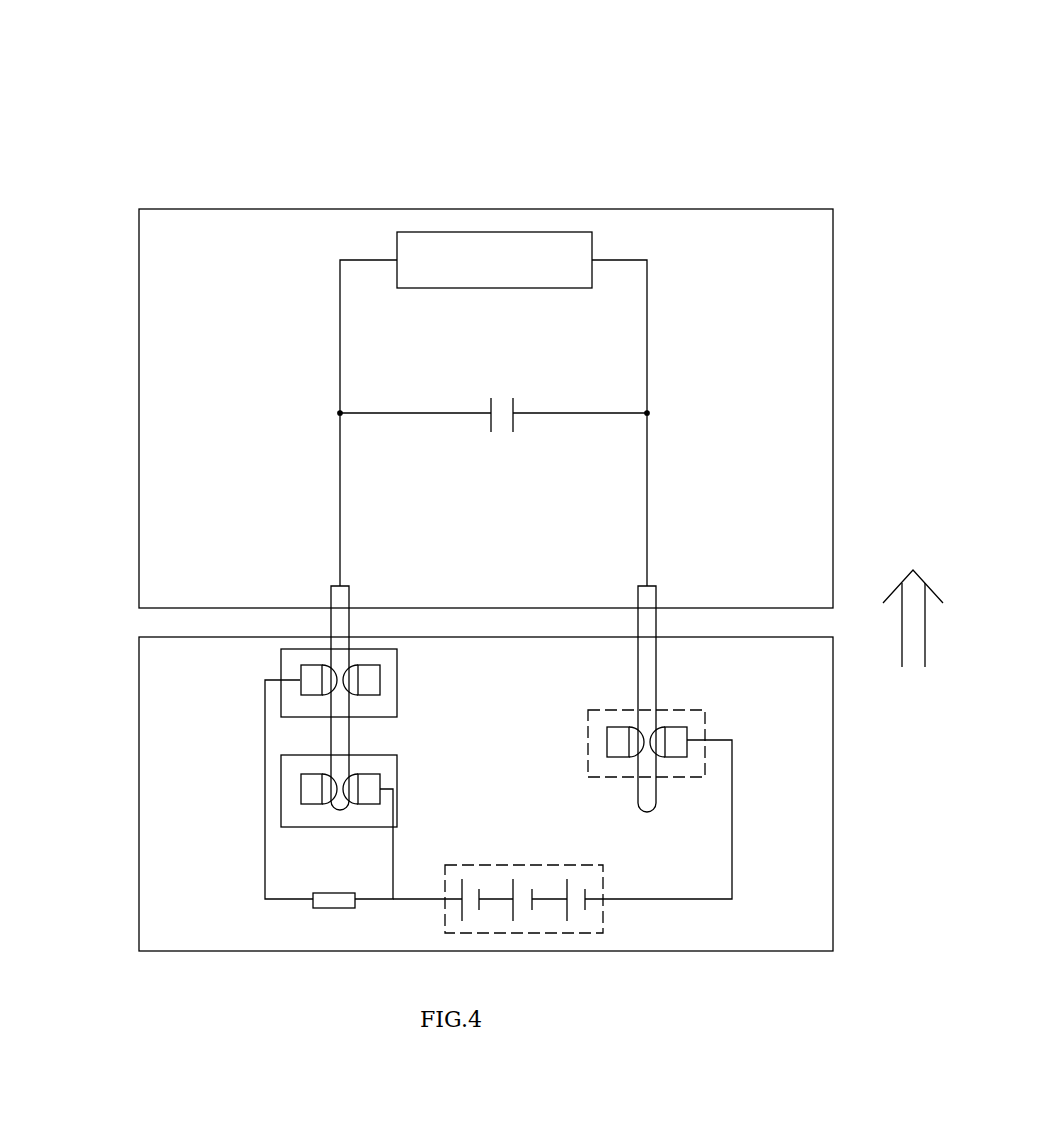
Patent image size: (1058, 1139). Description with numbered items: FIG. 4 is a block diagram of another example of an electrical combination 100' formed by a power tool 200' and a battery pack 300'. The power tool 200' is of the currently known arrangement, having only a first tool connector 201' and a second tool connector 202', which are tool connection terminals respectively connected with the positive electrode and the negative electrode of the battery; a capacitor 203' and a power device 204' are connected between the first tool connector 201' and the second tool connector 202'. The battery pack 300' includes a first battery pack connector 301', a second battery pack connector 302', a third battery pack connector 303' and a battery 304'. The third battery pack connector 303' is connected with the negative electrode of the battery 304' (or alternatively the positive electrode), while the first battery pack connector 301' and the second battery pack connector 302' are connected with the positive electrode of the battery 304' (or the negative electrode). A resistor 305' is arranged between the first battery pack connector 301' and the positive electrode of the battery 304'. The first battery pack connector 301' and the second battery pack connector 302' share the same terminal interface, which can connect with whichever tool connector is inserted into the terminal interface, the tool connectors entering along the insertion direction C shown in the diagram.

The electrical combination 100' is at (837, 52).
The power tool 200' is at (447, 408).
The first tool connector 201' is at (367, 677).
The second tool connector 202' is at (676, 678).
The capacitor 203' is at (470, 440).
The power device 204' is at (494, 281).
The battery pack 300' is at (443, 789).
The first battery pack connector 301' is at (364, 683).
The second battery pack connector 302' is at (364, 774).
The third battery pack connector 303' is at (670, 719).
The battery 304' is at (524, 876).
The resistor 305' is at (308, 921).
The insertion direction C is at (913, 637).